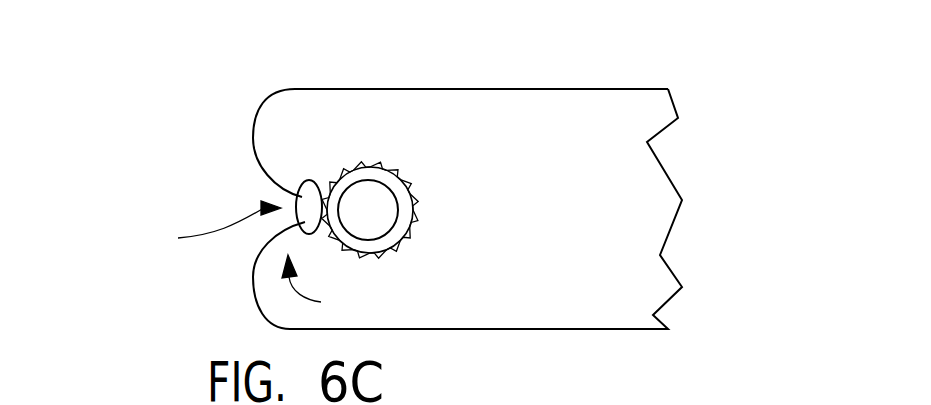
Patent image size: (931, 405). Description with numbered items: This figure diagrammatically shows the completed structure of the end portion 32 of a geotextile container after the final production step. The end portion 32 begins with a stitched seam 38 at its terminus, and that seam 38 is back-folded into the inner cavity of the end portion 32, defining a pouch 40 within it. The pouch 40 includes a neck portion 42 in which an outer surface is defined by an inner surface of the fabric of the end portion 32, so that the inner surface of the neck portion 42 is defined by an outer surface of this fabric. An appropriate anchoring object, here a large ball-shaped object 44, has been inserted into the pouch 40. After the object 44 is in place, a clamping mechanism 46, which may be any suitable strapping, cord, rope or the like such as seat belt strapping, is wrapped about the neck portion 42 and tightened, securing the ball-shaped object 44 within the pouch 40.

The end portion 32 is at (658, 60).
The stitched seam 38 is at (410, 183).
The pouch 40 is at (209, 227).
The neck portion 42 is at (322, 288).
The ball-shaped object 44 is at (375, 225).
The clamping mechanism 46 is at (305, 181).